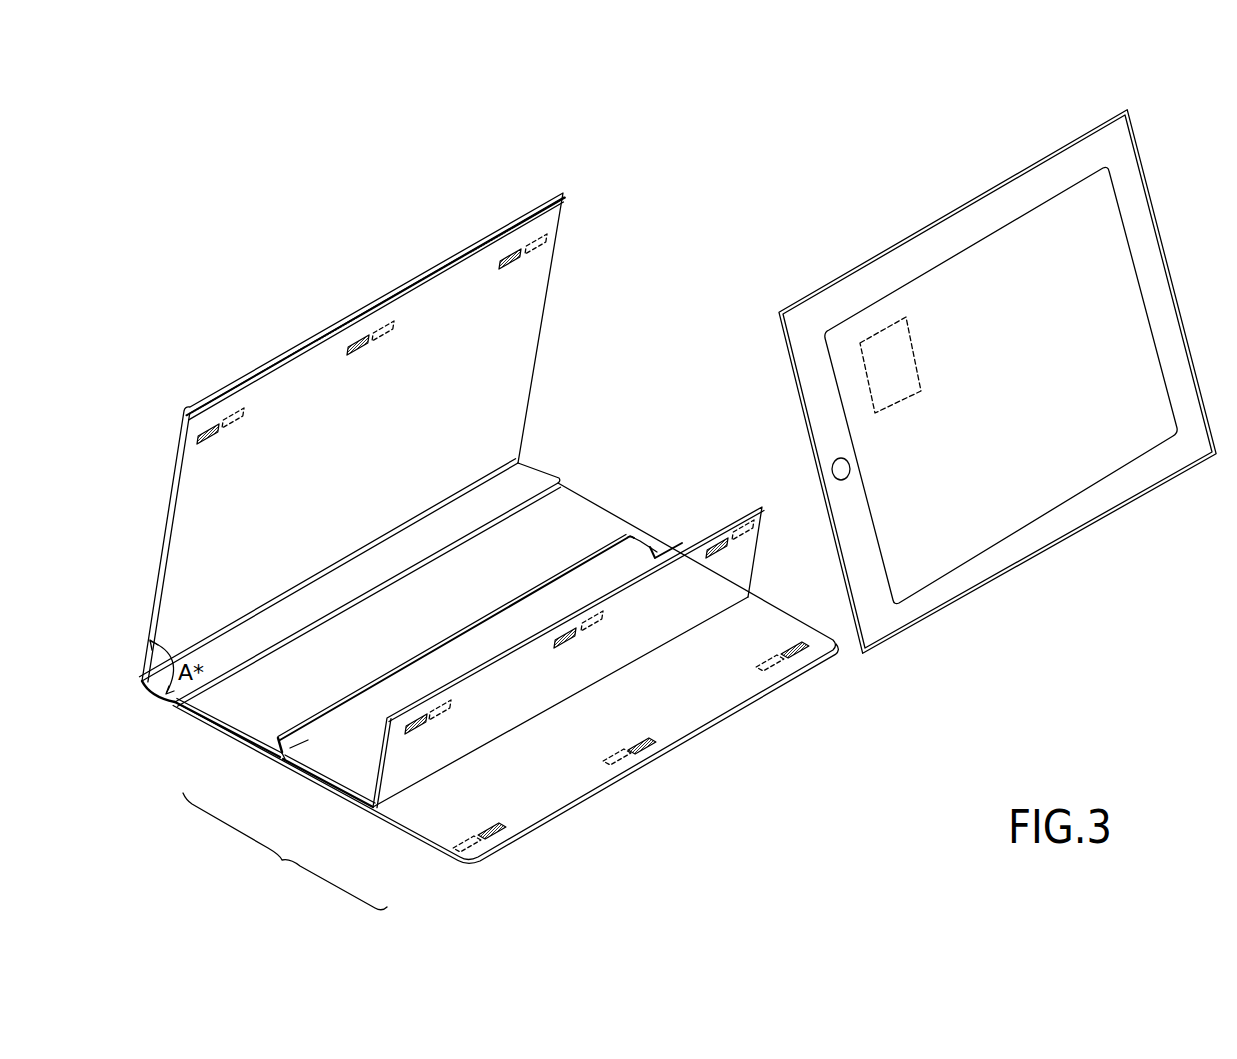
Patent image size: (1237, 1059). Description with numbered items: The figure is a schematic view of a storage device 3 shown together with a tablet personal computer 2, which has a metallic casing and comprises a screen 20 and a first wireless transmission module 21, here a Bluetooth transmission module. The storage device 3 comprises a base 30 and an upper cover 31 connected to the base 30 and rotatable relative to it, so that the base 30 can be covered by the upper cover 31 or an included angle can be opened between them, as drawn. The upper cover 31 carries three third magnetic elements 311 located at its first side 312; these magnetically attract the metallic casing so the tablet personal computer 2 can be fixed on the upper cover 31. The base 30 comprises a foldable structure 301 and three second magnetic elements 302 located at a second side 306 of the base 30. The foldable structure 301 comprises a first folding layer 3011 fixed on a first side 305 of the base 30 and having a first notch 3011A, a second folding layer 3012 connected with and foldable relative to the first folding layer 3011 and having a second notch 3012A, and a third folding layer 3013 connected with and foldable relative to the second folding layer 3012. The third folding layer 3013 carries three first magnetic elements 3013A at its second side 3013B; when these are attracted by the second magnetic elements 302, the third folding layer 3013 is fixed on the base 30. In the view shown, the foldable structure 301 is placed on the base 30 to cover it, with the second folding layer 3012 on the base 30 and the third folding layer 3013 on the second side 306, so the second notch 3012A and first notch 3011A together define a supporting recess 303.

The tablet personal computer 2 is at (940, 196).
The screen 20 is at (1122, 321).
The first wireless transmission module 21 is at (886, 345).
The storage device 3 is at (359, 256).
The base 30 is at (715, 692).
The foldable structure 301 is at (285, 851).
The first folding layer 3011 is at (250, 725).
The first notch 3011A is at (290, 762).
The second folding layer 3012 is at (332, 770).
The second notch 3012A is at (347, 740).
The third folding layer 3013 is at (397, 773).
The first magnetic elements 3013A is at (733, 537).
The second side of the third folding layer 3013B is at (477, 680).
The second magnetic elements 302 is at (807, 654).
The supporting recess 303 is at (560, 597).
The first side of the base 305 is at (185, 703).
The second side of the base 306 is at (628, 780).
The upper cover 31 is at (302, 383).
The third magnetic elements 311 is at (220, 427).
The first side of the upper cover 312 is at (460, 280).